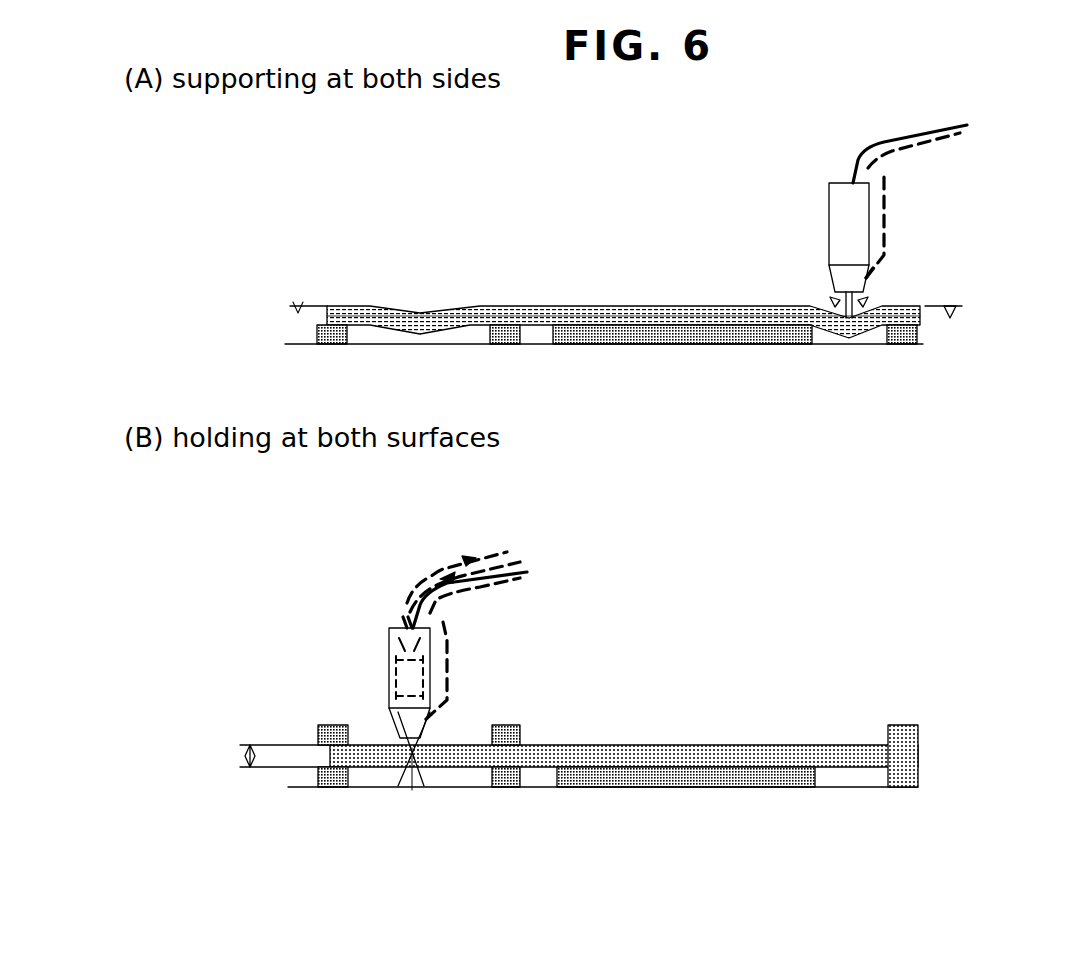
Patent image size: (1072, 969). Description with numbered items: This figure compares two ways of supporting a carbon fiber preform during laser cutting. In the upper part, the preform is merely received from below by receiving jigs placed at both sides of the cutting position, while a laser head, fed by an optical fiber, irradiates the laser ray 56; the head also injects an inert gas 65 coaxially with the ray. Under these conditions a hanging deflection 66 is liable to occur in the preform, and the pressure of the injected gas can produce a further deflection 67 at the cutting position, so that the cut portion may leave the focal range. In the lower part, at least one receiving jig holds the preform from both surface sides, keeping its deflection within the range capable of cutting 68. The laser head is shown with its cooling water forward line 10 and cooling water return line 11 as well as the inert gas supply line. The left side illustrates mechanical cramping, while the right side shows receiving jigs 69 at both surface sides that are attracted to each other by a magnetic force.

The cooling water forward line 10 is at (523, 553).
The cooling water return line 11 is at (490, 548).
The laser ray 56 is at (417, 788).
The inert gas 65 is at (866, 292).
The deflection 66 is at (300, 306).
The deflection 67 is at (962, 306).
The range capable of cutting 68 is at (246, 756).
The receiving jigs 69 is at (905, 732).